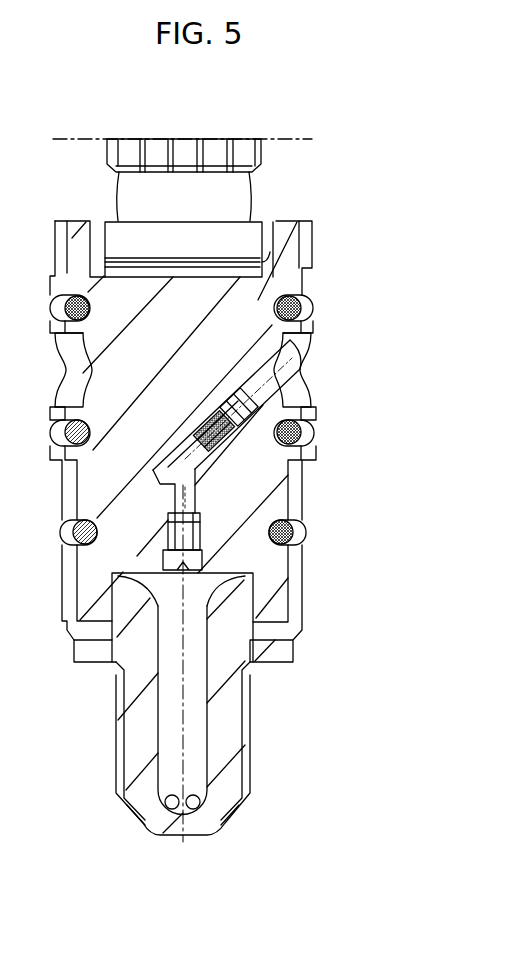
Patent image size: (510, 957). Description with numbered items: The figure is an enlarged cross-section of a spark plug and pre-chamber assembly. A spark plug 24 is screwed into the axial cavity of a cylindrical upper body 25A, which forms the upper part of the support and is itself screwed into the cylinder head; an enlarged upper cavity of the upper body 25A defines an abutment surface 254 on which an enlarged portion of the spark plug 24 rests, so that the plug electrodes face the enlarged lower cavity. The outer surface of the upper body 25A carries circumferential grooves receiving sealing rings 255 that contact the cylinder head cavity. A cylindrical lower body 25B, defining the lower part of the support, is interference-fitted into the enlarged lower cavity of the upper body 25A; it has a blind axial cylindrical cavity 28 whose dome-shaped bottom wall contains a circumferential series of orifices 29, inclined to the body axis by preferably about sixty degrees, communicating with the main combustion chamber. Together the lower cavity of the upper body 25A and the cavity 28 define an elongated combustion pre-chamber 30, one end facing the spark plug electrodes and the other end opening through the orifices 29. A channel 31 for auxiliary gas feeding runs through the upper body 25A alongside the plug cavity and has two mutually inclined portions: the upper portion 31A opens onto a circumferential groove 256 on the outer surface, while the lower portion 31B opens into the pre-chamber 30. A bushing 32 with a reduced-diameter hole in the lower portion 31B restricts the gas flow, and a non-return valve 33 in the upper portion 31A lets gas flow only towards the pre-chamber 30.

The spark plug 24 is at (264, 168).
The abutment surface 254 is at (98, 265).
The upper body 25A is at (298, 264).
The sealing rings 255 is at (313, 312).
The upper portion of the channel 31A is at (291, 358).
The circumferential groove 256 is at (315, 411).
The channel 31 is at (155, 442).
The lower portion of the channel 31B is at (187, 500).
The non-return valve 33 is at (213, 430).
The bushing 32 is at (171, 524).
The combustion pre-chamber 30 is at (193, 668).
The axial cylindrical cavity 28 is at (199, 718).
The lower body 25B is at (108, 746).
The orifices 29 is at (138, 812).